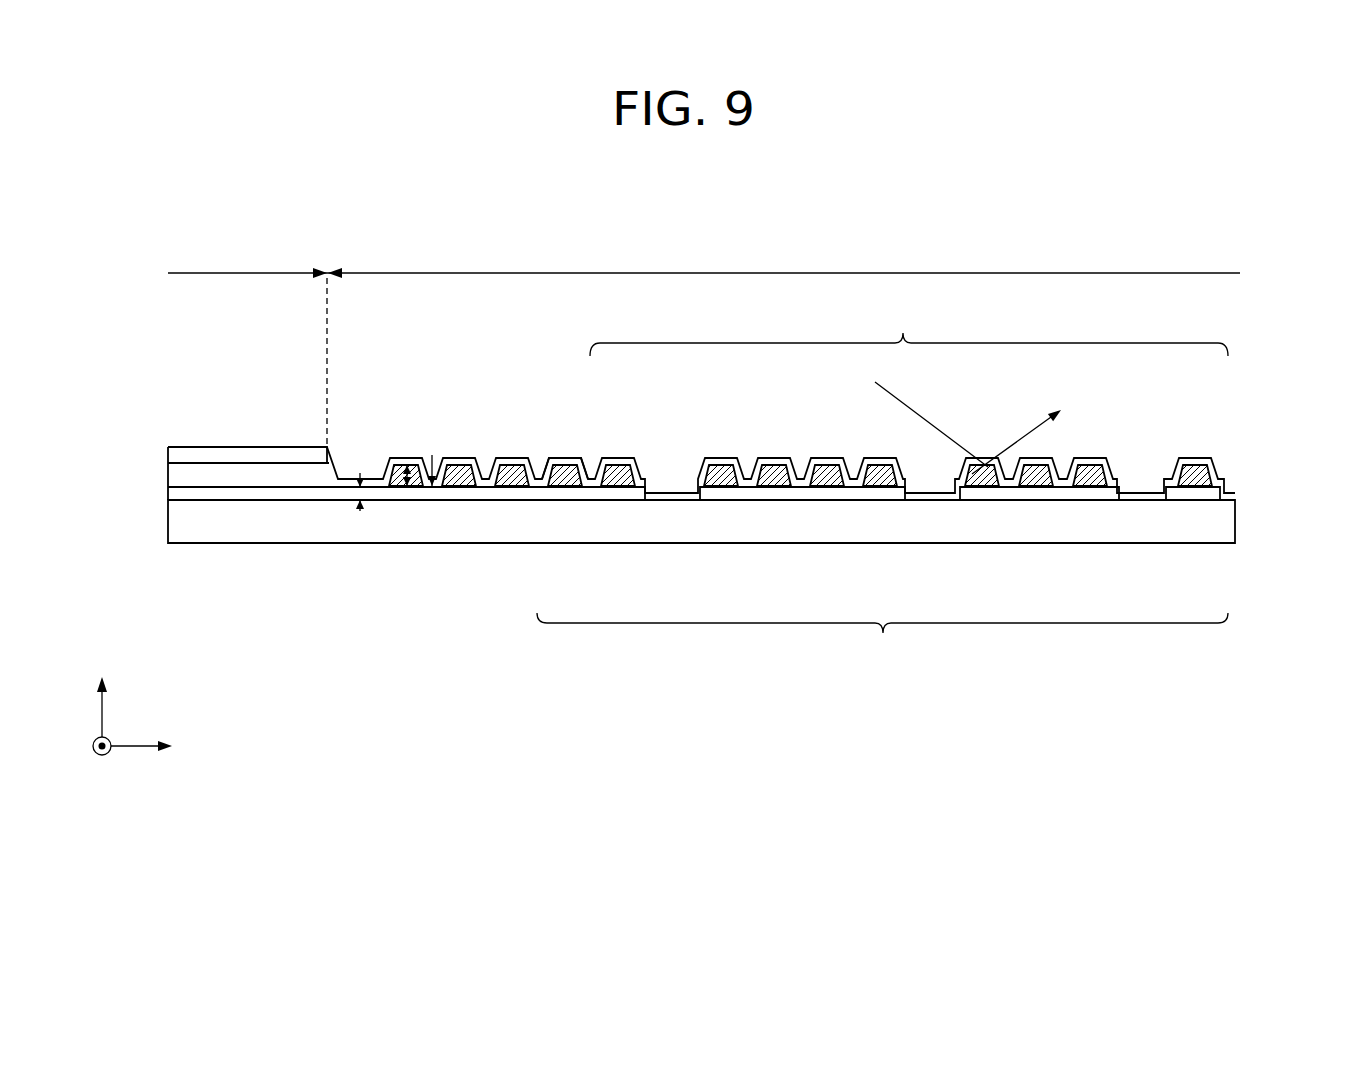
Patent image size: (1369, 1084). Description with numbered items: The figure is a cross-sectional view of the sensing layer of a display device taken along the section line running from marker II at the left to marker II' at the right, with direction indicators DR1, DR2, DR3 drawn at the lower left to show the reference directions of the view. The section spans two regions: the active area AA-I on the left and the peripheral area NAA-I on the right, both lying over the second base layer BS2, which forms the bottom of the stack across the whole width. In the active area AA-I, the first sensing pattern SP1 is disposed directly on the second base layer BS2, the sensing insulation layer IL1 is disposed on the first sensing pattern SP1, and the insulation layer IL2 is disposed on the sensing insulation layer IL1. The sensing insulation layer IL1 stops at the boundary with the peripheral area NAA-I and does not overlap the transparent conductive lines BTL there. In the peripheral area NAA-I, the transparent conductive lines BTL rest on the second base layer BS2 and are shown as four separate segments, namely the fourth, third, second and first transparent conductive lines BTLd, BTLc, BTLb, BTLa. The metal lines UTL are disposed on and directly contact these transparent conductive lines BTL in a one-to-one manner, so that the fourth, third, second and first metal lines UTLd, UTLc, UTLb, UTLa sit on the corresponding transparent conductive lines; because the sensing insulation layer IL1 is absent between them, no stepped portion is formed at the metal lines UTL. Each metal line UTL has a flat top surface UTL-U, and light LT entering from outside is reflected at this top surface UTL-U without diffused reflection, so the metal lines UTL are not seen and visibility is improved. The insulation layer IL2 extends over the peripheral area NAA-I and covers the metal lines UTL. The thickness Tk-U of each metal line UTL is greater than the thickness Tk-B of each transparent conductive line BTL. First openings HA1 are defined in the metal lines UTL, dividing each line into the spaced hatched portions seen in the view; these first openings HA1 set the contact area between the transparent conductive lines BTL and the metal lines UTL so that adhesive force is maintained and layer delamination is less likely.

The active area AA-I is at (247, 346).
The peripheral area NAA-I is at (783, 261).
The second base layer BS2 is at (1223, 522).
The first sensing pattern SP1 is at (178, 495).
The sensing insulation layer IL1 is at (178, 472).
The insulation layer IL2 is at (178, 455).
The top surface UTL-U is at (565, 458).
The thickness of metal line Tk-U is at (407, 463).
The first openings HA1 is at (432, 455).
The thickness of transparent conductive line Tk-B is at (363, 497).
The metal lines UTL is at (808, 396).
The fourth metal line UTLd is at (615, 470).
The third metal line UTLc is at (772, 470).
The second metal line UTLb is at (1036, 470).
The first metal line UTLa is at (1195, 470).
The light LT is at (984, 428).
The transparent conductive lines BTL is at (783, 575).
The fourth transparent conductive line BTLd is at (572, 492).
The third transparent conductive line BTLc is at (772, 492).
The second transparent conductive line BTLb is at (1040, 492).
The first transparent conductive line BTLa is at (1195, 492).
The section line II is at (172, 562).
The section line II' is at (1240, 562).
The first direction DR1 is at (102, 762).
The second direction DR2 is at (164, 748).
The third direction DR3 is at (102, 692).